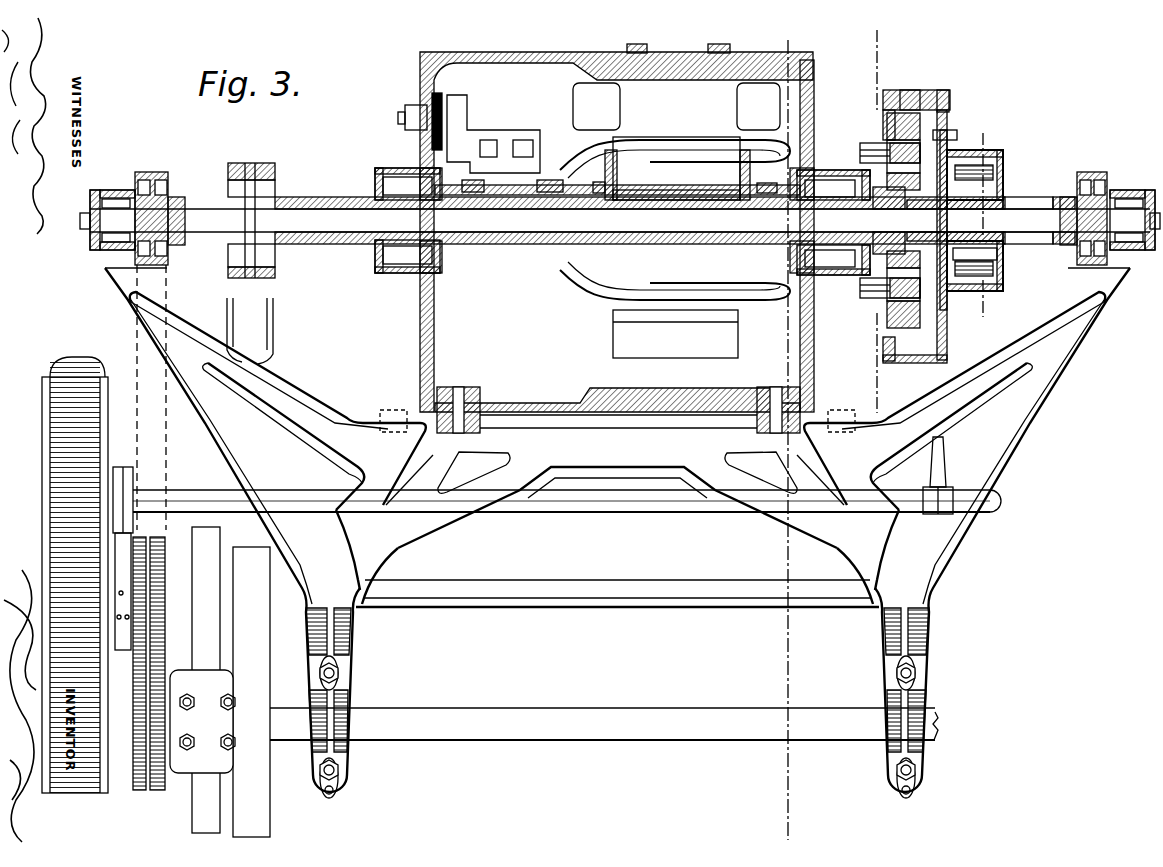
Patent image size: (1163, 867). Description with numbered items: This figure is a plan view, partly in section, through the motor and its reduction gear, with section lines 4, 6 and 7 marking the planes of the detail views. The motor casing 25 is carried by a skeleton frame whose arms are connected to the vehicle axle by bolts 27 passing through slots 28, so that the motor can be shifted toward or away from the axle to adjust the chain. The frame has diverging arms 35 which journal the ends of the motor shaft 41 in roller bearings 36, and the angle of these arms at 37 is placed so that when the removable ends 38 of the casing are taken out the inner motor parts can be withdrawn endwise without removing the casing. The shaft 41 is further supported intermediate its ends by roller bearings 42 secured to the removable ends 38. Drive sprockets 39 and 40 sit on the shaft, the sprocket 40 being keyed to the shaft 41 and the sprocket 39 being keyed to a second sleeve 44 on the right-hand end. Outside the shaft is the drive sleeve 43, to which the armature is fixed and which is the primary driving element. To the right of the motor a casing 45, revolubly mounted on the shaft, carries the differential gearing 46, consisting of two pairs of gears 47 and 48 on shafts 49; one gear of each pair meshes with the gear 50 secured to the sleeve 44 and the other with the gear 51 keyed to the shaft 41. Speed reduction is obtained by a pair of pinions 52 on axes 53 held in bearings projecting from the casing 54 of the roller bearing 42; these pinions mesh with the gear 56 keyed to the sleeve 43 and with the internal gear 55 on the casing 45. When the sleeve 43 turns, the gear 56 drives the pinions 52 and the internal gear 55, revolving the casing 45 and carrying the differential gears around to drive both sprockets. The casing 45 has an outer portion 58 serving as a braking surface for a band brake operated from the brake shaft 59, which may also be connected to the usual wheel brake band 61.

The motor casing 25 is at (502, 54).
The bolts 27 is at (918, 677).
The slots 28 is at (911, 789).
The diverging arms 35 is at (223, 412).
The roller bearings 36 is at (118, 236).
The angle of the arms 37 is at (350, 418).
The removable ends 38 is at (428, 94).
The drive sprocket 39 is at (1092, 203).
The drive sprocket 40 is at (143, 176).
The motor shaft 41 is at (318, 217).
The roller bearings 42 is at (385, 184).
The drive sleeve 43 is at (327, 200).
The second sleeve 44 is at (1048, 200).
The casing 45 is at (947, 92).
The differential gearing 46 is at (1028, 172).
The gears 47 is at (990, 253).
The gears 48 is at (963, 172).
The shafts 49 is at (990, 173).
The gear 50 is at (980, 192).
The gear 51 is at (955, 205).
The pinions 52 is at (890, 127).
The axes 53 is at (860, 147).
The casing 54 is at (830, 176).
The internal gear 55 is at (910, 122).
The gear 56 is at (882, 204).
The outer portion 58 is at (924, 92).
The brake shaft 59 is at (650, 501).
The wheel brake band 61 is at (128, 794).
The section line 4 is at (801, 431).
The section line 6 is at (997, 226).
The section line 7 is at (864, 221).